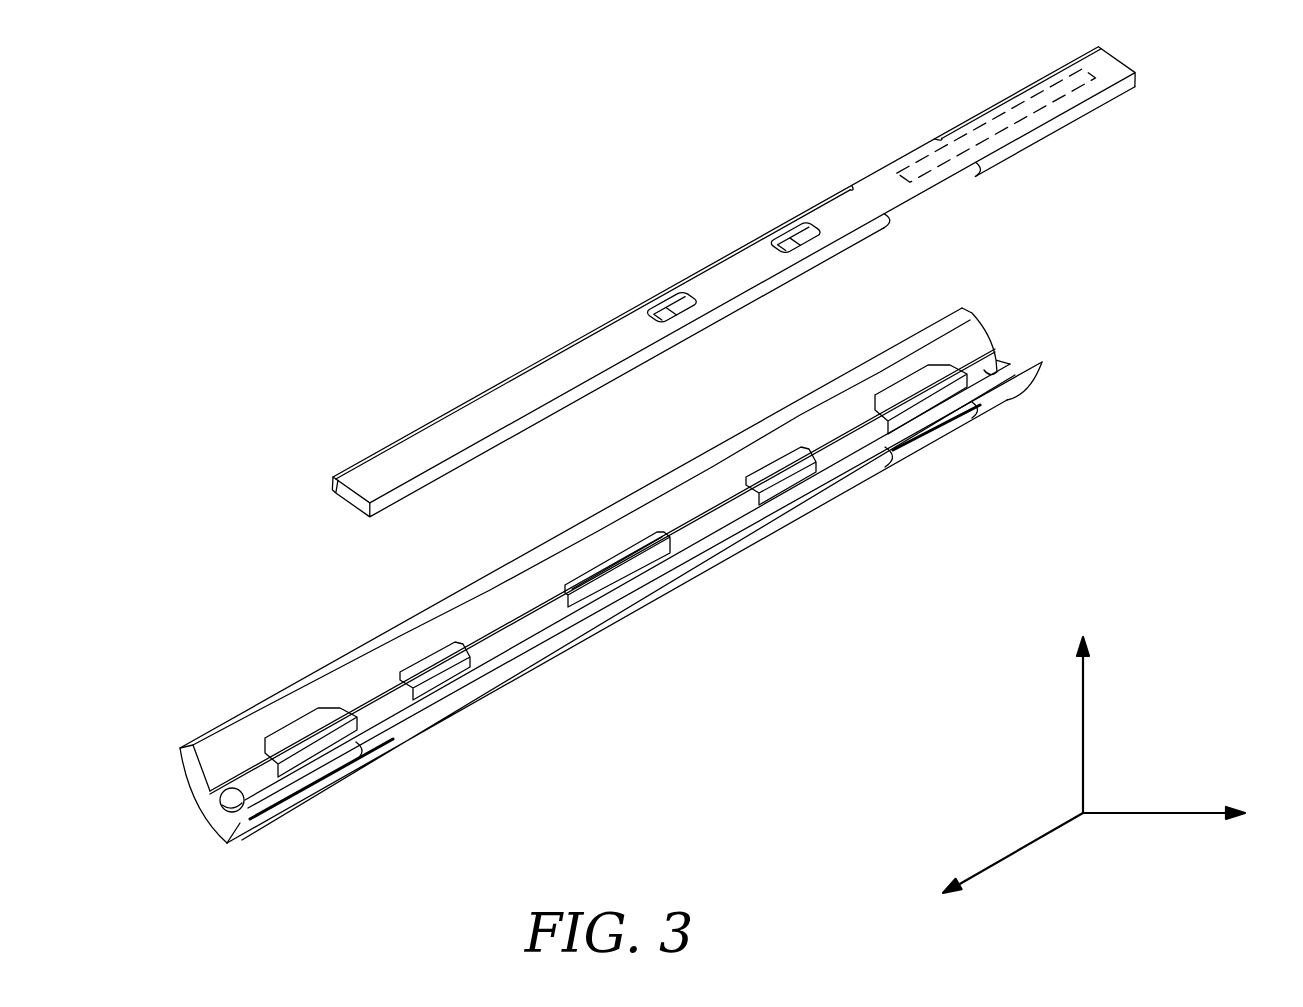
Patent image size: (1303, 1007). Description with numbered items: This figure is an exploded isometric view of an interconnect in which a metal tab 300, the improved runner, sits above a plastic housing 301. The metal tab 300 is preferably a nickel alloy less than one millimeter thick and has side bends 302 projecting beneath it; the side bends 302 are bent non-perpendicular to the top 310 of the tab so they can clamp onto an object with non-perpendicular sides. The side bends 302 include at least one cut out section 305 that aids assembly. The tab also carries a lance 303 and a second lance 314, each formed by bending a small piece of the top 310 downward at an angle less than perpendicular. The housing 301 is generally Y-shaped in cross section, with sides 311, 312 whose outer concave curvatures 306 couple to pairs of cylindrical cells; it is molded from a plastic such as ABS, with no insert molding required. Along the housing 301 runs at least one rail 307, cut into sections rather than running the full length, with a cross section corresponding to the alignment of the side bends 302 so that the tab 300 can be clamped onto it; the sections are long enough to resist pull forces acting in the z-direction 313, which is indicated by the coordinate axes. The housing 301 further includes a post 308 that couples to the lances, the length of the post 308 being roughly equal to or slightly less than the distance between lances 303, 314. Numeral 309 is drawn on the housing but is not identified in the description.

The metal tab 300 is at (478, 407).
The housing 301 is at (512, 683).
The side bends 302 is at (345, 496).
The lance 303 is at (673, 300).
The cut out section 305 is at (930, 190).
The outer concave curvatures 306 is at (203, 786).
The rail 307 is at (300, 735).
The post 308 is at (610, 555).
The back wall 309 is at (460, 623).
The top of the tab 310 is at (909, 170).
The side 311 is at (190, 747).
The side 312 is at (408, 712).
The z-direction 313 is at (1086, 727).
The lance 314 is at (792, 232).